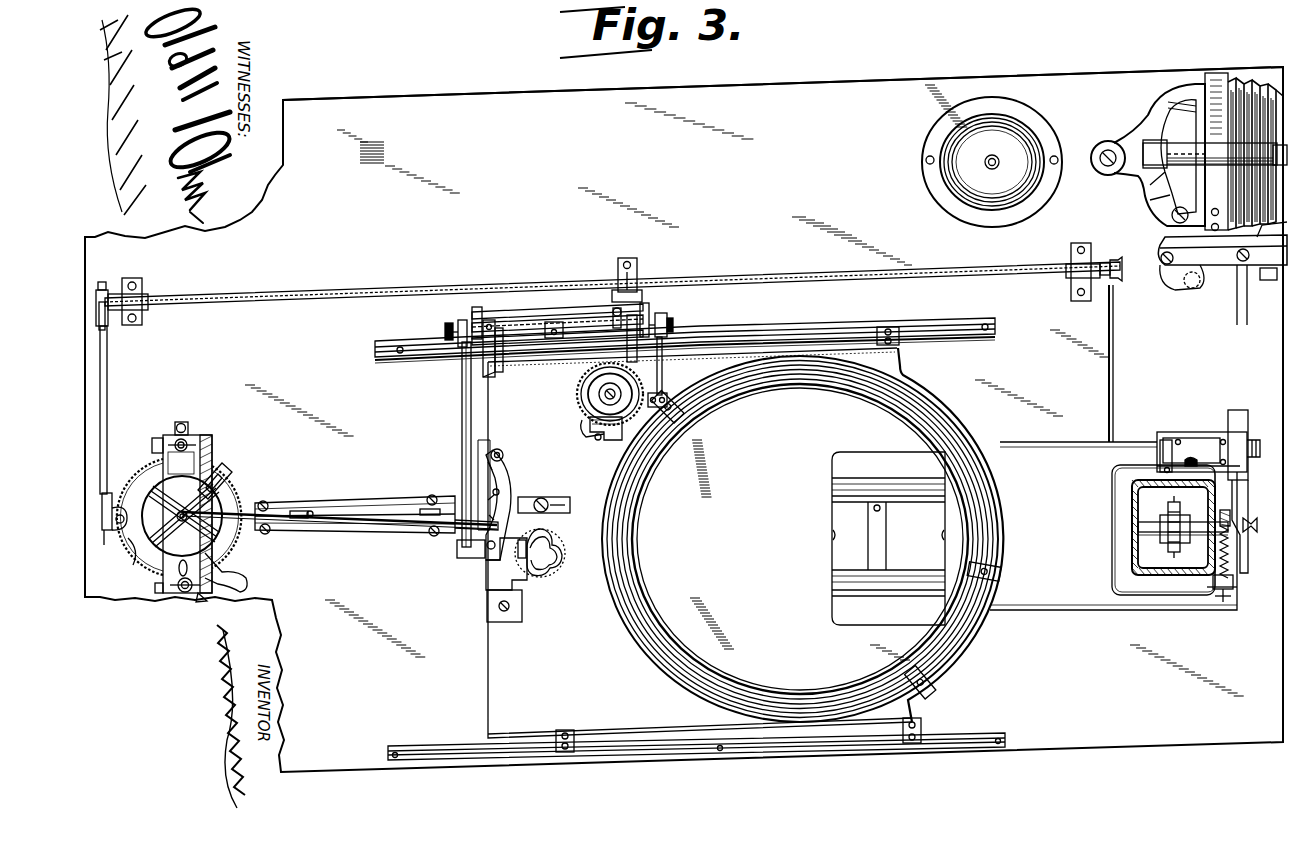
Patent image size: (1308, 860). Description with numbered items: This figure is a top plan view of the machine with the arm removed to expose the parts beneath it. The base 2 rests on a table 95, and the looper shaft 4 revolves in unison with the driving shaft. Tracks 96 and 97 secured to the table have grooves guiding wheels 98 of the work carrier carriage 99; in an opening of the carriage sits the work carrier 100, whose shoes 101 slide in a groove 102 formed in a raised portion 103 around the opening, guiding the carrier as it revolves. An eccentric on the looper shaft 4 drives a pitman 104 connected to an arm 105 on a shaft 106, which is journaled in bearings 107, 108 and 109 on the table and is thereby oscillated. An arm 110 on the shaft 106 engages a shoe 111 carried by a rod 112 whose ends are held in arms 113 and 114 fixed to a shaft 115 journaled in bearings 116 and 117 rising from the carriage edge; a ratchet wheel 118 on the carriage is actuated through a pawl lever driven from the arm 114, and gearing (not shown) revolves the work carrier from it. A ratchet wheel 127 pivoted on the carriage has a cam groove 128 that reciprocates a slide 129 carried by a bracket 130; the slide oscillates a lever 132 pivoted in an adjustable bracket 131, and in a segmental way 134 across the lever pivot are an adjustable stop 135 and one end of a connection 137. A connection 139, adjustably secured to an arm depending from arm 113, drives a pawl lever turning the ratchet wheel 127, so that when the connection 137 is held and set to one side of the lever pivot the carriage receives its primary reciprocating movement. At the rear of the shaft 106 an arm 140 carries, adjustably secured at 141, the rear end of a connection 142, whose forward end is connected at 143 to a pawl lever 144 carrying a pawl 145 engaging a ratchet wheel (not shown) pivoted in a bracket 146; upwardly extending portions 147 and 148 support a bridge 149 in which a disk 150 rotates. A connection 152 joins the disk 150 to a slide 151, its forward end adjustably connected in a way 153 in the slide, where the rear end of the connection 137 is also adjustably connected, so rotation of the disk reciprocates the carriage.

The base 2 is at (1113, 526).
The looper shaft 4 is at (1160, 530).
The table 95 is at (783, 370).
The track 96 is at (995, 327).
The track 97 is at (1007, 737).
The guiding wheels 98 is at (880, 328).
The work carrier carriage 99 is at (745, 543).
The work carrier 100 is at (925, 430).
The shoes 101 is at (870, 385).
The groove 102 is at (790, 366).
The raised portion 103 is at (985, 578).
The pitman 104 is at (1113, 411).
The arm 105 is at (1113, 258).
The shaft 106 is at (900, 275).
The bearing 107 is at (142, 290).
The bearing 108 is at (637, 262).
The bearing 109 is at (1071, 250).
The arm 110 is at (618, 283).
The shoe 111 is at (614, 306).
The rod 112 is at (540, 310).
The arm 113 is at (462, 318).
The arm 114 is at (662, 312).
The shaft 115 is at (505, 325).
The bearing 116 is at (492, 377).
The bearing 117 is at (664, 395).
The ratchet wheel 118 is at (580, 403).
The ratchet wheel 127 is at (551, 568).
The cam groove 128 is at (532, 608).
The slide 129 is at (462, 558).
The bracket 130 is at (507, 564).
The bracket 131 is at (560, 497).
The lever 132 is at (508, 475).
The segmental way 134 is at (488, 472).
The stop 135 is at (498, 449).
The connection 137 is at (452, 530).
The connection 139 is at (462, 410).
The arm 140 is at (112, 295).
The adjustable connection point 141 is at (108, 322).
The connection 142 is at (108, 395).
The connection point 143 is at (110, 535).
The pawl lever 144 is at (110, 500).
The pawl 145 is at (170, 578).
The bracket 146 is at (214, 468).
The upwardly extending portion 147 is at (190, 440).
The upwardly extending portion 148 is at (206, 600).
The bridge 149 is at (184, 464).
The disk 150 is at (218, 528).
The slide 151 is at (320, 490).
The connection 152 is at (250, 512).
The way 153 is at (318, 532).